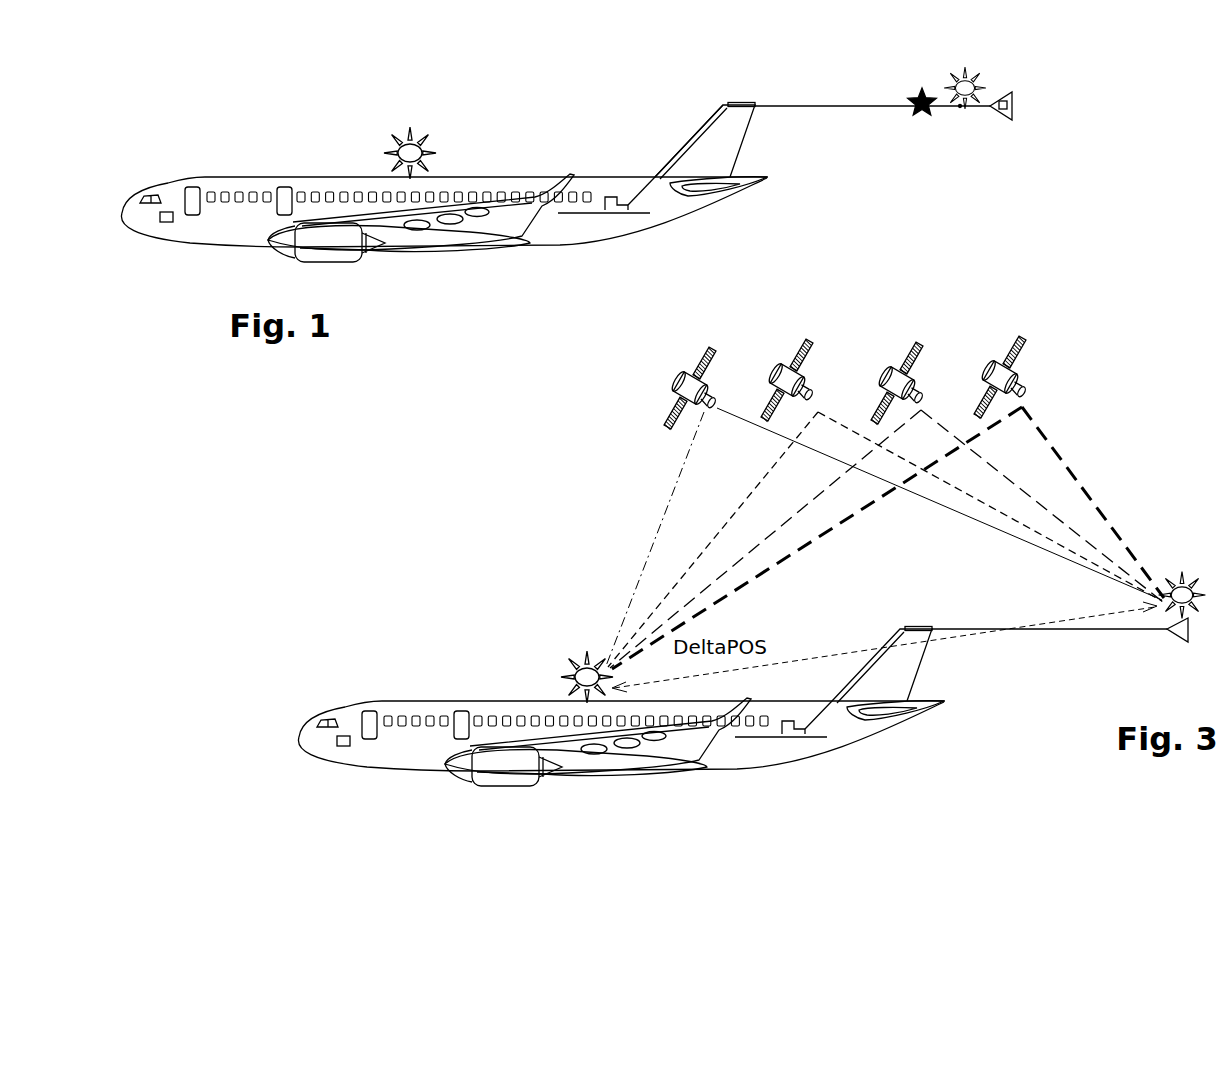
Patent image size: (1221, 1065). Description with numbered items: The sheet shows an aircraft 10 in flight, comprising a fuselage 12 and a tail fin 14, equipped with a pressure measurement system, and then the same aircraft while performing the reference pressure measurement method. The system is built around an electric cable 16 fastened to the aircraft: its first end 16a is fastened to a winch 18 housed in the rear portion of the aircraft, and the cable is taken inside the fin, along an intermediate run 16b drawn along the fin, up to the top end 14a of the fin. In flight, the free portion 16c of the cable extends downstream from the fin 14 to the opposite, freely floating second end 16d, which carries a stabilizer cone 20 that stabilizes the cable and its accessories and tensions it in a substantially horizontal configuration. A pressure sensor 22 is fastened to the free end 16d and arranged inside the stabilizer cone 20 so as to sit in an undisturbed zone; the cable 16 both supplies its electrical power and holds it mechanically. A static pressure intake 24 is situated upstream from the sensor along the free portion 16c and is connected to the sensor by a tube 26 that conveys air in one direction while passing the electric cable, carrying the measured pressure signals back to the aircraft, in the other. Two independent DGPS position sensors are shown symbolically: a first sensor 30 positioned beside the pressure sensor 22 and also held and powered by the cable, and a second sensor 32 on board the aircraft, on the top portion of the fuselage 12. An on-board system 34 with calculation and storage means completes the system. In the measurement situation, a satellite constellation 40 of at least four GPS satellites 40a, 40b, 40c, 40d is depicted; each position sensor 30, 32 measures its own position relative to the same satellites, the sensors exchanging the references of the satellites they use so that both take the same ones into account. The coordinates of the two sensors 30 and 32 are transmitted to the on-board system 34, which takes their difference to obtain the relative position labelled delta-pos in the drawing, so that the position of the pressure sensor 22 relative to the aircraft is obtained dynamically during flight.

In FIG. 1, the aircraft 10 is at (195, 160).
In FIG. 3, the aircraft 10 is at (621, 720).
In FIG. 1, the fuselage 12 is at (171, 180).
In FIG. 1, the tail fin 14 is at (744, 143).
In FIG. 1, the top end of the fin 14a is at (738, 102).
In FIG. 1, the electric cable 16 is at (712, 96).
In FIG. 1, the first end of the cable 16a is at (627, 200).
In FIG. 1, the second line segment along fin 16b is at (693, 135).
In FIG. 1, the free portion of the cable 16c is at (859, 108).
In FIG. 3, the free portion of the cable 16c is at (1066, 633).
In FIG. 1, the second end of the cable 16d is at (993, 108).
In FIG. 1, the winch 18 is at (603, 190).
In FIG. 1, the stabilizer cone 20 is at (1008, 100).
In FIG. 1, the pressure sensor 22 is at (1004, 110).
In FIG. 1, the static pressure intake 24 is at (915, 92).
In FIG. 1, the tube 26 is at (957, 107).
In FIG. 1, the first DGPS sensor 30 is at (972, 68).
In FIG. 3, the first DGPS sensor 30 is at (1200, 576).
In FIG. 1, the second DGPS sensor 32 is at (395, 137).
In FIG. 3, the second DGPS sensor 32 is at (579, 646).
In FIG. 1, the on-board system 34 is at (167, 223).
In FIG. 3, the on-board system 34 is at (337, 774).
In FIG. 3, the satellite constellation 40 is at (770, 325).
In FIG. 3, the satellite 40a is at (675, 388).
In FIG. 3, the satellite 40b is at (775, 388).
In FIG. 3, the satellite 40c is at (885, 381).
In FIG. 3, the satellite 40d is at (995, 360).